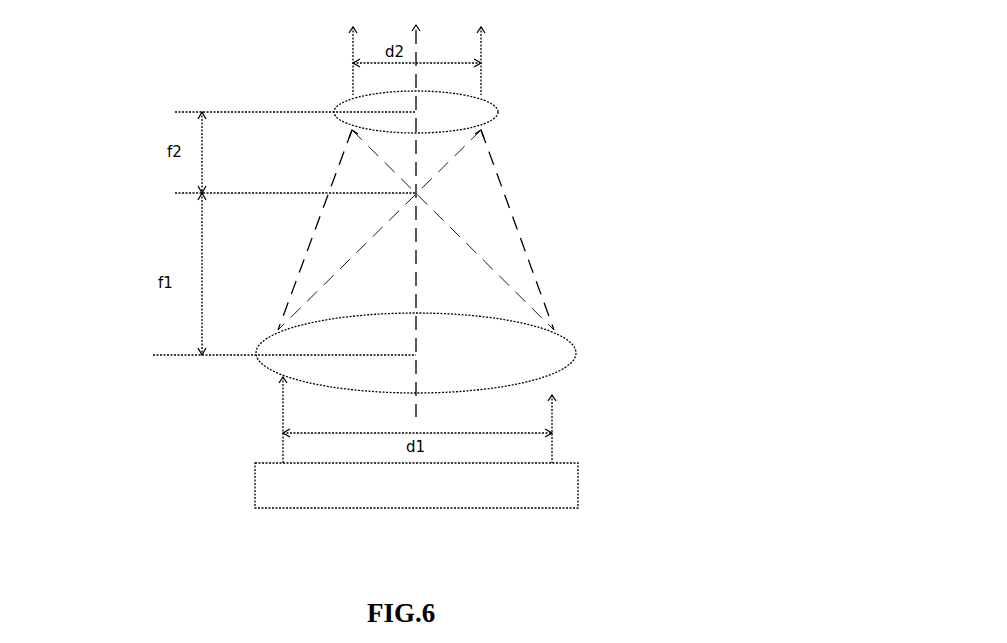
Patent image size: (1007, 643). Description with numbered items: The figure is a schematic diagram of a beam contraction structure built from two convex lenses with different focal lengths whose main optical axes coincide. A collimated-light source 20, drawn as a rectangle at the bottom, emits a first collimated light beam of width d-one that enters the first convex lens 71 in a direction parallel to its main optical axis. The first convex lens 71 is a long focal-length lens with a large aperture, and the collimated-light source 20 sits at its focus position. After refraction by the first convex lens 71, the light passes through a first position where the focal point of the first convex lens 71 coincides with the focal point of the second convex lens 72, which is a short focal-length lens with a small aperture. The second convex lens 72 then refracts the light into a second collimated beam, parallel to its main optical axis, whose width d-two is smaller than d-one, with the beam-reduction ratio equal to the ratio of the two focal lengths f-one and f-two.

The second convex lens 72 is at (498, 113).
The first convex lens 71 is at (576, 350).
The collimated-light source 20 is at (255, 491).